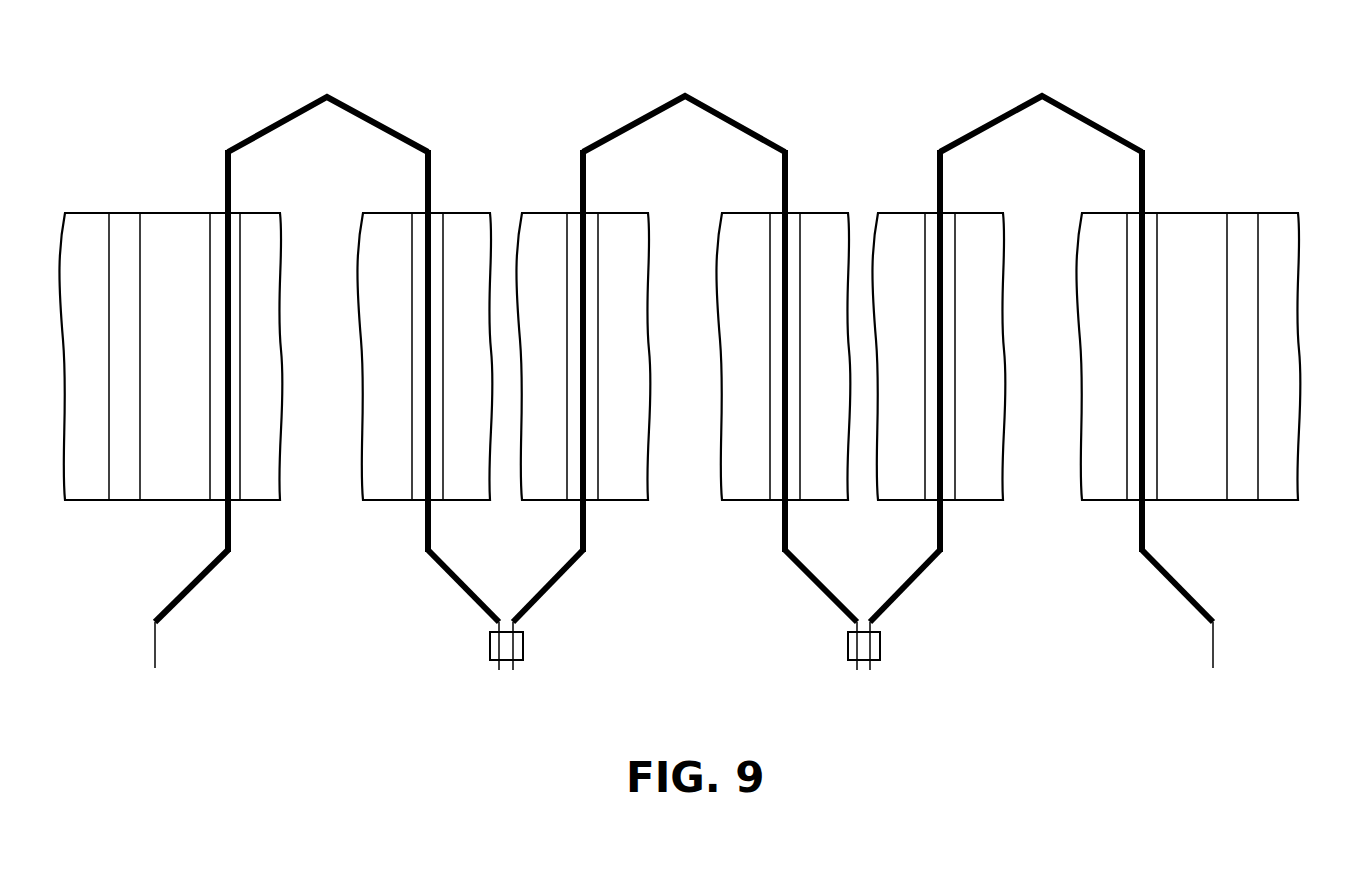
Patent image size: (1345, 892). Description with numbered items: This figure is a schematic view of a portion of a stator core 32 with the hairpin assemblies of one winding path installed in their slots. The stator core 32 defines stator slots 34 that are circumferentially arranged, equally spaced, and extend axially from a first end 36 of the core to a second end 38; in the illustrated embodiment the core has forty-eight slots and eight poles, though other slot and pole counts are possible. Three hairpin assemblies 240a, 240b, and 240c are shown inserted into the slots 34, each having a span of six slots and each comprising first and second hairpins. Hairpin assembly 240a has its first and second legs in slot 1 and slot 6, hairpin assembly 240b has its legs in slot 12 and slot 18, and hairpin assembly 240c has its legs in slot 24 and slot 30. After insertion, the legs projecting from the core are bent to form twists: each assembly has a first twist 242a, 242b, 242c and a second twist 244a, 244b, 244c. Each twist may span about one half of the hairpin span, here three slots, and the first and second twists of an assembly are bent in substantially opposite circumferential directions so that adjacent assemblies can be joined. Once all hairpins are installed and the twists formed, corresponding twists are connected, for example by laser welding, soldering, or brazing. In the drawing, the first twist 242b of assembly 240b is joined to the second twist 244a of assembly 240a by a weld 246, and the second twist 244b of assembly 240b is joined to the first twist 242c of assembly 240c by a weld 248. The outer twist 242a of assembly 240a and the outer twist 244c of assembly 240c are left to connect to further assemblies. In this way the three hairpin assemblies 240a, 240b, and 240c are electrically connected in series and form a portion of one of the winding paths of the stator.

The slot 1 is at (218, 342).
The slot 6 is at (437, 342).
The slot 12 is at (565, 342).
The slot 18 is at (801, 342).
The slot 24 is at (923, 342).
The slot 30 is at (1158, 342).
The stator core 32 is at (1193, 222).
The stator slots 34 is at (244, 227).
The first end 36 is at (1188, 501).
The second end 38 is at (1276, 213).
The hairpin assembly 240a is at (385, 117).
The hairpin assembly 240b is at (738, 119).
The hairpin assembly 240c is at (1094, 121).
The first twist 242a is at (192, 588).
The first twist 242b is at (551, 590).
The first twist 242c is at (907, 590).
The second twist 244a is at (458, 590).
The second twist 244b is at (818, 590).
The second twist 244c is at (1175, 590).
The weld 246 is at (488, 643).
The weld 248 is at (882, 645).